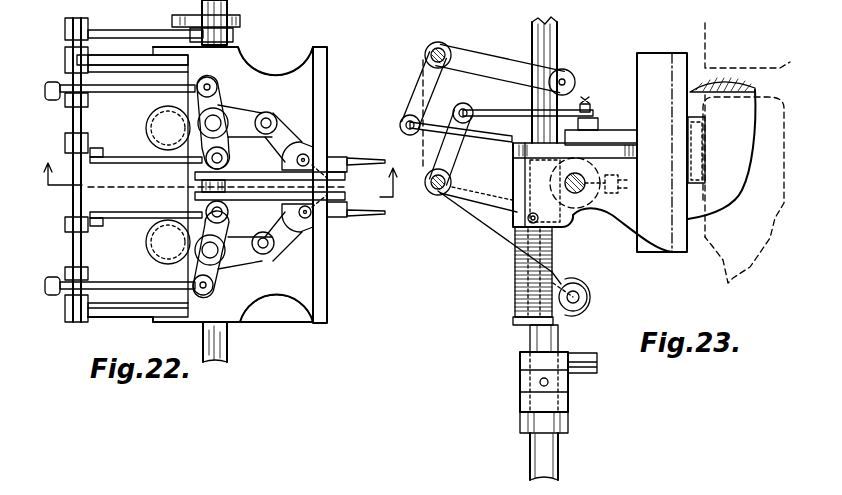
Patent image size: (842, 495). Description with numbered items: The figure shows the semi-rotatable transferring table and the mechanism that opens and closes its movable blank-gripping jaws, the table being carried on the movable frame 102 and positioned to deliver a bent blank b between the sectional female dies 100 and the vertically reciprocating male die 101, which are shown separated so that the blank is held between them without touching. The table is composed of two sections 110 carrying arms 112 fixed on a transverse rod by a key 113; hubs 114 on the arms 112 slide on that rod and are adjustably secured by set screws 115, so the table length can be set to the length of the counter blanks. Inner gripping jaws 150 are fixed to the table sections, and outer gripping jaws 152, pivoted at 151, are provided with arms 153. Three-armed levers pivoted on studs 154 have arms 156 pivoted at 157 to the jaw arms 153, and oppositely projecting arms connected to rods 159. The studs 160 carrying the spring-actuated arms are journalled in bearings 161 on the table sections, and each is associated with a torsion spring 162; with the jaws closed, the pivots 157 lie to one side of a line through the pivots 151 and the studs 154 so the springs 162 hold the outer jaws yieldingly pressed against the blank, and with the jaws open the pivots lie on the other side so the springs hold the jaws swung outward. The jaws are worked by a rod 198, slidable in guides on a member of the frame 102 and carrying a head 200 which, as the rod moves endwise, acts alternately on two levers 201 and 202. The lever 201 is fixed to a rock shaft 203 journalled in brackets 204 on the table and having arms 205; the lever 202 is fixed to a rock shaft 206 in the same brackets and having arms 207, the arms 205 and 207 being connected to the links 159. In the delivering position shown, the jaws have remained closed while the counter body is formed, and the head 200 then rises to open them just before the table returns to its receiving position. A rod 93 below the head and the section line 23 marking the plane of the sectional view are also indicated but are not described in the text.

In FIG. 22, the section line 23- 23 is at (219, 182).
In FIG. 23, the rod 93 is at (558, 471).
In FIG. 22, the sectional female dies 100 is at (328, 115).
In FIG. 23, the sectional female dies 100 is at (743, 53).
In FIG. 22, the male die 101 is at (228, 352).
In FIG. 23, the male die 101 is at (592, 190).
In FIG. 22, the frame 102 is at (248, 80).
In FIG. 23, the frame 102 is at (556, 340).
In FIG. 23, the table sections 110 is at (677, 56).
In FIG. 23, the arms 112 is at (594, 216).
In FIG. 23, the key 113 is at (566, 173).
In FIG. 23, the hubs 114 is at (602, 174).
In FIG. 23, the set screws 115 is at (622, 183).
In FIG. 22, the inner gripping jaws 150 is at (343, 200).
In FIG. 22, the pivot 151 is at (303, 153).
In FIG. 22, the outer gripping jaws 152 is at (326, 157).
In FIG. 22, the jaw arms 153 is at (277, 139).
In FIG. 23, the jaw arms 153 is at (613, 137).
In FIG. 22, the studs 154 is at (214, 118).
In FIG. 22, the lever arms 156 is at (247, 105).
In FIG. 22, the pivot 157 is at (268, 112).
In FIG. 22, the rods 159 is at (112, 92).
In FIG. 23, the rods 159 is at (495, 116).
In FIG. 23, the studs 160 is at (527, 330).
In FIG. 23, the bearings 161 is at (513, 219).
In FIG. 23, the torsion spring 162 is at (553, 260).
In FIG. 23, the rod 198 is at (543, 445).
In FIG. 23, the head 200 is at (570, 378).
In FIG. 22, the lever 201 is at (140, 35).
In FIG. 23, the lever 201 is at (487, 62).
In FIG. 22, the lever 202 is at (233, 38).
In FIG. 23, the lever 202 is at (507, 248).
In FIG. 22, the rock shaft 203 is at (73, 120).
In FIG. 23, the rock shaft 203 is at (438, 43).
In FIG. 22, the brackets 204 is at (103, 57).
In FIG. 23, the brackets 204 is at (423, 82).
In FIG. 23, the arms 205 is at (407, 107).
In FIG. 23, the rock shaft 206 is at (434, 195).
In FIG. 23, the arms 207 is at (437, 163).
In FIG. 22, the blade b is at (368, 191).
In FIG. 23, the blade b is at (755, 84).